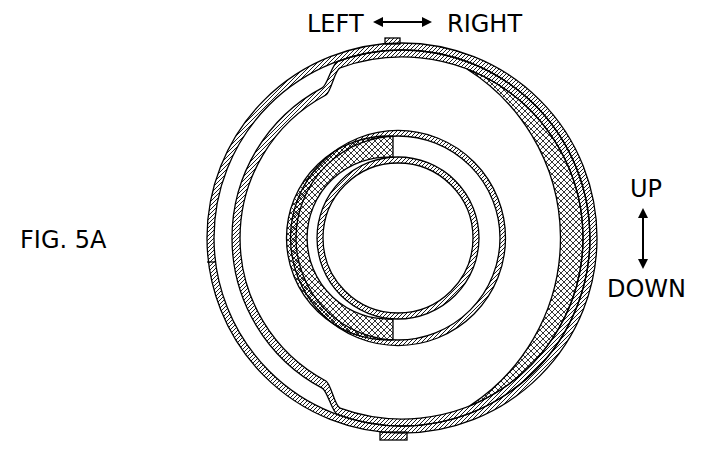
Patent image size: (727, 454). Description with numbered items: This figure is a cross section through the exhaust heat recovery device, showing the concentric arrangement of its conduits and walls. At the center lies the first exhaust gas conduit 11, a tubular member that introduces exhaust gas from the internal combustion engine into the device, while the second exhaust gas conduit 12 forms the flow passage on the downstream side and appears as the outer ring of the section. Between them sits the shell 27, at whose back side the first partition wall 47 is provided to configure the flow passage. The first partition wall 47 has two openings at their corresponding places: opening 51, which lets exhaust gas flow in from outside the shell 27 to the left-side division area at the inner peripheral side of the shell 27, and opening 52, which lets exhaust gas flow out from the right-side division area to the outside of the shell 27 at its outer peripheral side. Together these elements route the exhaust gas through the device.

The first exhaust gas conduit 11 is at (320, 241).
The second exhaust gas conduit 12 is at (209, 218).
The shell 27 is at (212, 262).
The first partition wall 47 is at (300, 92).
The opening 51 is at (360, 160).
The opening 52 is at (551, 143).